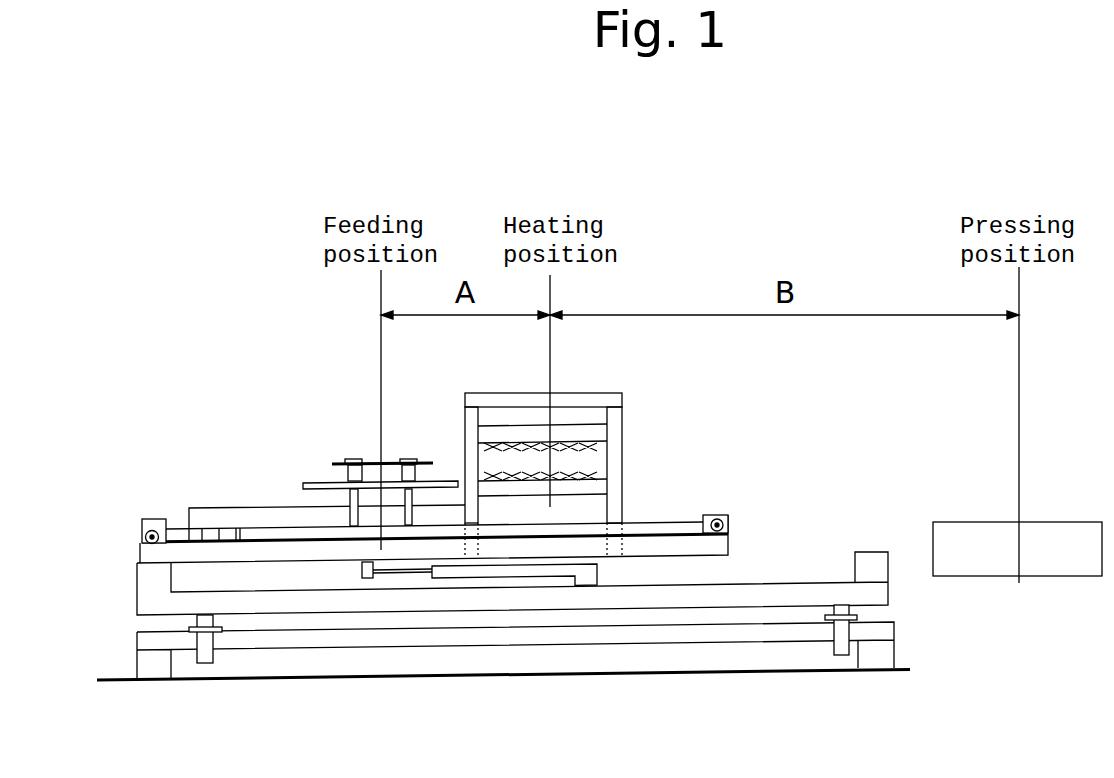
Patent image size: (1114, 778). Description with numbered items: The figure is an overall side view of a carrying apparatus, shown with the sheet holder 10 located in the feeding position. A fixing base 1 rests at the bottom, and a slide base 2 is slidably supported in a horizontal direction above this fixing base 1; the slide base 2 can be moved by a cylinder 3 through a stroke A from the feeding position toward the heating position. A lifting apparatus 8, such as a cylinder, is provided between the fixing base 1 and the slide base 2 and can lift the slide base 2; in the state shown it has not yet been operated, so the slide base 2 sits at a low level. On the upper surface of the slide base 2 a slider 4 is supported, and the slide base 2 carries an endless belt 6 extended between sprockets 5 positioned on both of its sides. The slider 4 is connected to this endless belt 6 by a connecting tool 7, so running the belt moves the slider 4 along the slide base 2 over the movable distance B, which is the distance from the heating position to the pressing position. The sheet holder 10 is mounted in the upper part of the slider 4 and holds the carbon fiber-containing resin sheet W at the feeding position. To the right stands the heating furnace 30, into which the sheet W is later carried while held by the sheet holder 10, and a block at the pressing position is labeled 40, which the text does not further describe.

The fixing base 1 is at (403, 636).
The slide base 2 is at (278, 552).
The cylinder 3 is at (530, 572).
The slider 4 is at (213, 517).
The sprockets 5 is at (152, 519).
The endless belt 6 is at (657, 522).
The connecting tool 7 is at (227, 541).
The lifting apparatus 8 is at (207, 638).
The sheet holder 10 is at (352, 463).
The heating furnace 30 is at (575, 400).
The press 40 is at (1060, 537).
The carbon fiber-containing resin sheet W is at (393, 463).